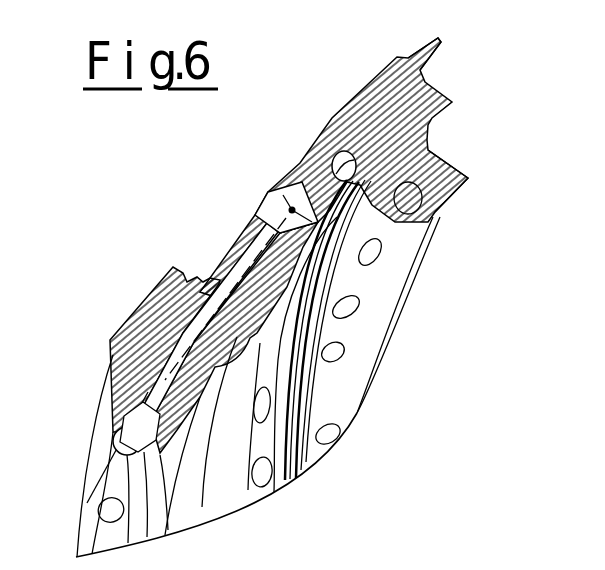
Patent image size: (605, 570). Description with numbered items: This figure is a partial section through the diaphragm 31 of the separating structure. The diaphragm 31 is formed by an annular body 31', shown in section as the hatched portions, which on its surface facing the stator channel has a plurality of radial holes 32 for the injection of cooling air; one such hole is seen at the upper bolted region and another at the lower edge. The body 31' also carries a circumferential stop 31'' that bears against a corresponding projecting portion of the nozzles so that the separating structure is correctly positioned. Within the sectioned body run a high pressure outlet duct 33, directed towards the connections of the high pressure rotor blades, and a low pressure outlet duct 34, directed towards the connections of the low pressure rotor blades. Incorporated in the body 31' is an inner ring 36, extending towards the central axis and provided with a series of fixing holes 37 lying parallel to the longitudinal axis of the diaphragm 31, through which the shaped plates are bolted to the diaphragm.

The diaphragm 31 is at (334, 167).
The annular body 31' is at (461, 69).
The circumferential stop 31'' is at (85, 456).
The radial holes 32 is at (290, 206).
The high pressure outlet ducts 33 is at (190, 345).
The low pressure outlet ducts 34 is at (350, 167).
The inner ring 36 is at (460, 195).
The fixing holes 37 is at (350, 307).